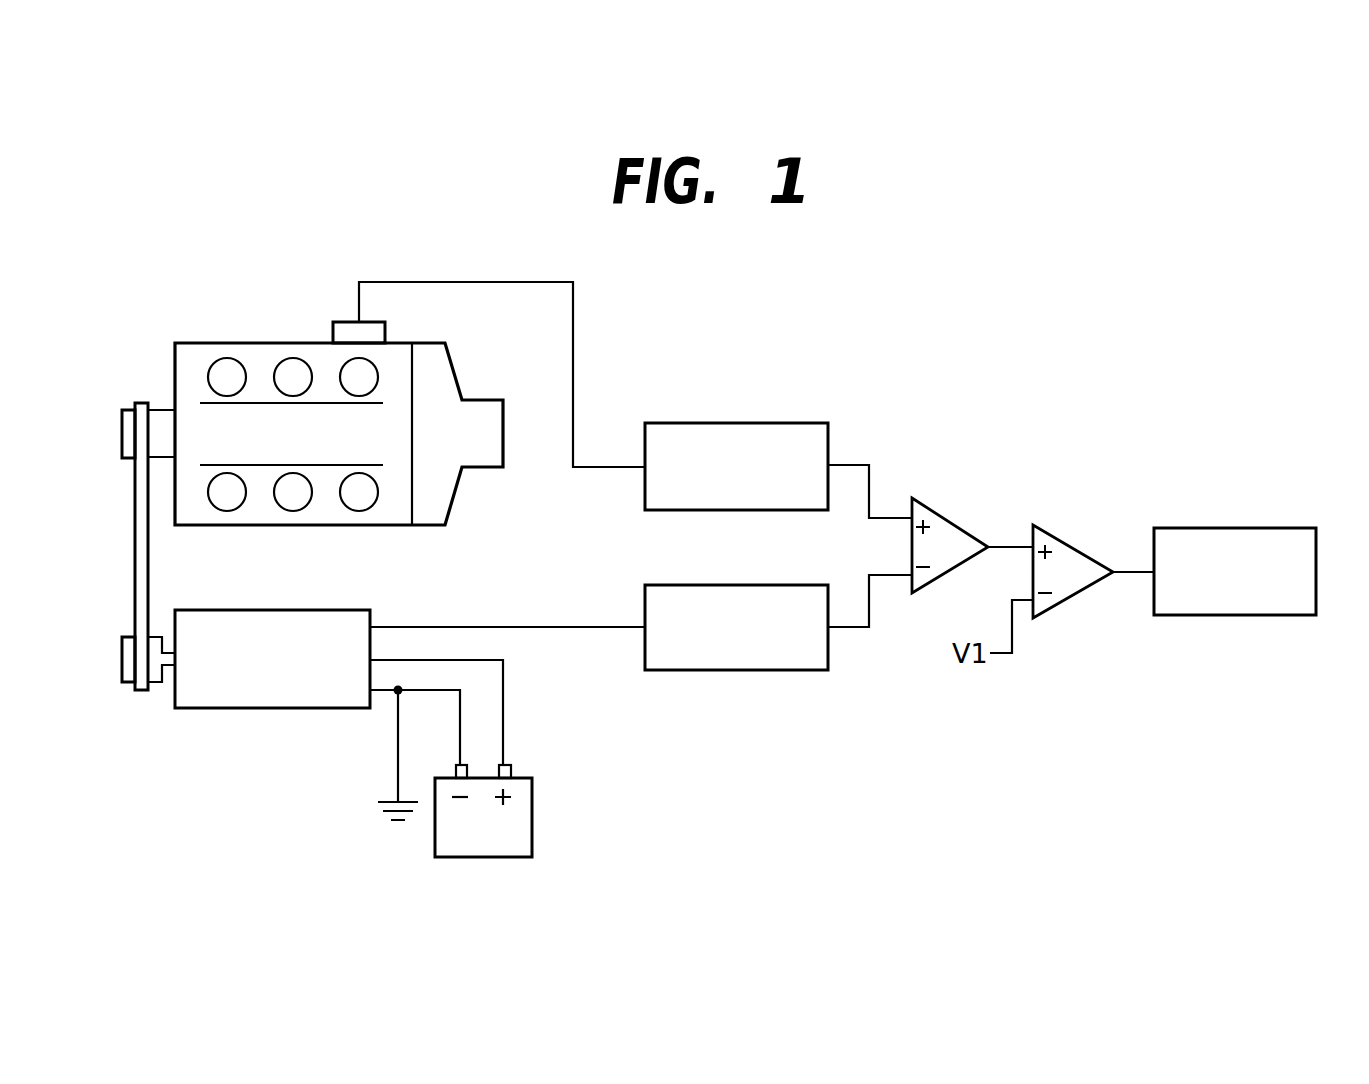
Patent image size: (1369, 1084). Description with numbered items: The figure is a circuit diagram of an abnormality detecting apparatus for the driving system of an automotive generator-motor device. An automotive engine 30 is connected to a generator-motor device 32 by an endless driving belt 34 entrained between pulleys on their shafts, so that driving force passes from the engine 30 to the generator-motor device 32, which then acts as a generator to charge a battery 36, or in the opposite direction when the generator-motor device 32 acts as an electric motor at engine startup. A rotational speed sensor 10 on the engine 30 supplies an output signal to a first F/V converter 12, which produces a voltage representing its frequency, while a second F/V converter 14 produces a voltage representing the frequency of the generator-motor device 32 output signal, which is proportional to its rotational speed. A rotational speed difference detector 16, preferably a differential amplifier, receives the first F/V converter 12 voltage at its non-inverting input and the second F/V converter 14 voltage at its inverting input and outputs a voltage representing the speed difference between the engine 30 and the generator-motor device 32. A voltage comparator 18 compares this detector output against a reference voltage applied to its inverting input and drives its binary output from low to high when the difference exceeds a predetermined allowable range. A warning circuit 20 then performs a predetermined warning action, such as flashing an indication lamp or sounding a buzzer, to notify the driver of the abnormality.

The rotational speed sensor 10 is at (344, 321).
The first F/V converter 12 is at (768, 423).
The second F/V converter 14 is at (768, 585).
The rotational speed difference detector 16 is at (950, 523).
The voltage comparator 18 is at (1070, 548).
The warning circuit 20 is at (1260, 529).
The automotive engine 30 is at (218, 344).
The generator-motor device 32 is at (306, 611).
The endless driving belt 34 is at (134, 519).
The battery 36 is at (531, 803).